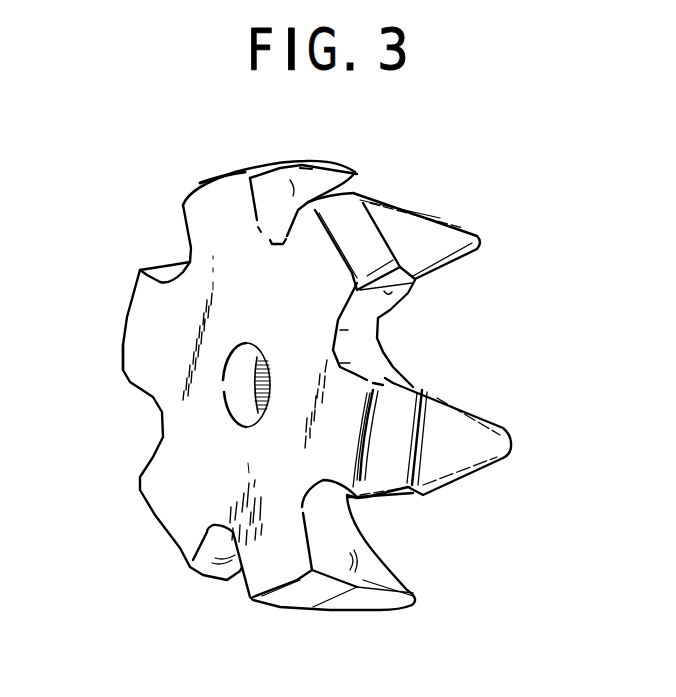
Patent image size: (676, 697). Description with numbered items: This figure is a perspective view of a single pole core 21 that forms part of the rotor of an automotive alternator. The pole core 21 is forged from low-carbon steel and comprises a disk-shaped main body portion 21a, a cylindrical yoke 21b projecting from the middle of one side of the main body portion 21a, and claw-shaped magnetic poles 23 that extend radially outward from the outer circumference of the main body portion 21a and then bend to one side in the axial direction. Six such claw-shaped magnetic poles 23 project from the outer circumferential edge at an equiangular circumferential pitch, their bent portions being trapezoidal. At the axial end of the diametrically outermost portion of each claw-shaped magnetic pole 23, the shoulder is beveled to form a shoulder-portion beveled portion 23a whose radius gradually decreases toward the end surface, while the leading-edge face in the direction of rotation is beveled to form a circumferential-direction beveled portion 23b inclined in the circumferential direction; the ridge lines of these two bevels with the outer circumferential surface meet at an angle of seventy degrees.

The pole core 21 is at (509, 166).
The main body portion 21a is at (190, 413).
The yoke 21b is at (396, 352).
The claw-shaped magnetic pole 23 is at (462, 240).
The shoulder-portion beveled portion 23a is at (365, 228).
The circumferential-direction beveled portion 23b is at (397, 268).